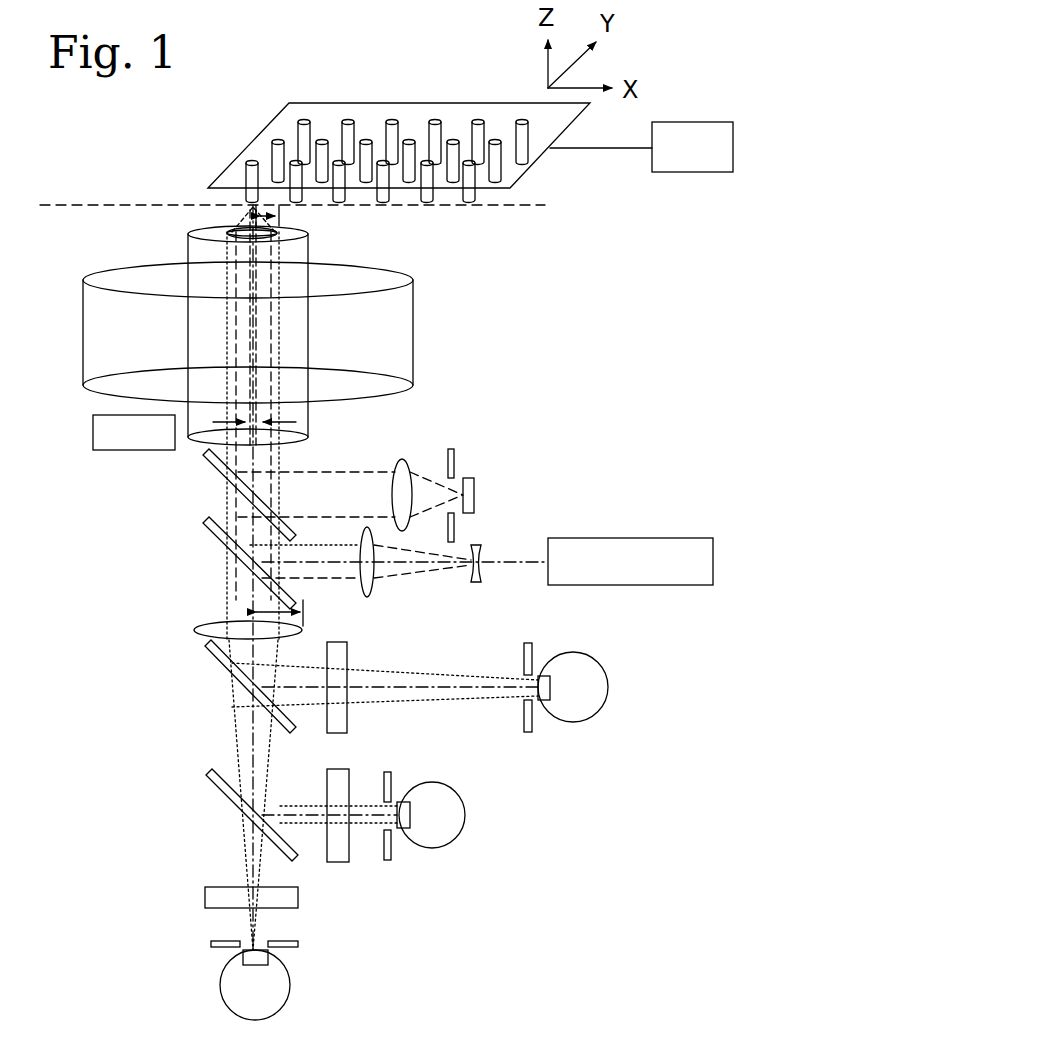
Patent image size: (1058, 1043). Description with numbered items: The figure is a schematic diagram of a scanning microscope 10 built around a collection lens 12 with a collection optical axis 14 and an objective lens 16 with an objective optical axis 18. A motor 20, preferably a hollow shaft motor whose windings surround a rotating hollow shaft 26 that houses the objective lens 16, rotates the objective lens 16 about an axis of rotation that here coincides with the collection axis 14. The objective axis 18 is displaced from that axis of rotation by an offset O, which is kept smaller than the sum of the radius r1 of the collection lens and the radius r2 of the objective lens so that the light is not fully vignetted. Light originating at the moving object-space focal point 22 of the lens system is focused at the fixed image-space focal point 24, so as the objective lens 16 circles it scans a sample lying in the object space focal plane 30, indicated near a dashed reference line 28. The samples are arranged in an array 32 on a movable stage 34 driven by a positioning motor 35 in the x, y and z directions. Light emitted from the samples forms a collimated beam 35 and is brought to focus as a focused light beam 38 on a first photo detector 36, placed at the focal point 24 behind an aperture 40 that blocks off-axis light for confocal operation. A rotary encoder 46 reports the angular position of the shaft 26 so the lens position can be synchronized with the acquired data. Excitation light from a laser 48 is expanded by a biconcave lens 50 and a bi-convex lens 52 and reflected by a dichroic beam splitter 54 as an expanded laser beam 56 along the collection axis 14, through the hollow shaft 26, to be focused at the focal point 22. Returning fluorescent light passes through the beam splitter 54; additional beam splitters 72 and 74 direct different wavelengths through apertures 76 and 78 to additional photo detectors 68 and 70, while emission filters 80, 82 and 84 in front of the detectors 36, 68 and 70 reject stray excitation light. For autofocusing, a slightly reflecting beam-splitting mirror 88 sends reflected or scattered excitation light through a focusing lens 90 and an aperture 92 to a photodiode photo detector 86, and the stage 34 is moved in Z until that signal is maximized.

The scanning microscope 10 is at (688, 300).
The collection lens 12 is at (205, 628).
The collection optical axis 14 is at (250, 738).
The objective lens 16 is at (228, 232).
The objective optical axis 18 is at (280, 322).
The motor 20 is at (413, 312).
The object-space focal point 22 is at (240, 226).
The image-space focal point 24 is at (268, 950).
The hollow shaft 26 is at (188, 255).
The reference plane 28 is at (82, 205).
The object space focal plane 30 is at (543, 205).
The array 32 is at (388, 121).
The movable stage 34 is at (289, 103).
The positioning motor 35 is at (226, 596).
The first photo detector 36 is at (290, 986).
The focused light beam 38 is at (240, 850).
The aperture 40 is at (300, 943).
The rotary encoder 46 is at (105, 450).
The laser 48 is at (630, 561).
The biconcave lens 50 is at (477, 548).
The bi-convex lens 52 is at (373, 588).
The beam splitter 54 is at (217, 540).
The expanded laser beam 56 is at (300, 548).
The additional photo detector 68 is at (466, 820).
The additional photo detector 70 is at (608, 695).
The additional beam splitter 72 is at (216, 792).
The additional beam splitter 74 is at (216, 662).
The aperture 76 is at (394, 852).
The aperture 78 is at (536, 725).
The emission filter 80 is at (205, 897).
The emission filter 82 is at (340, 769).
The emission filter 84 is at (350, 662).
The additional photo detector 86 is at (476, 492).
The beam-splitting mirror 88 is at (218, 472).
The focusing lens 90 is at (400, 460).
The aperture 92 is at (456, 456).
The offset O is at (275, 425).
The radius of the collection lens r1 is at (305, 612).
The radius of the objective lens r2 is at (282, 208).